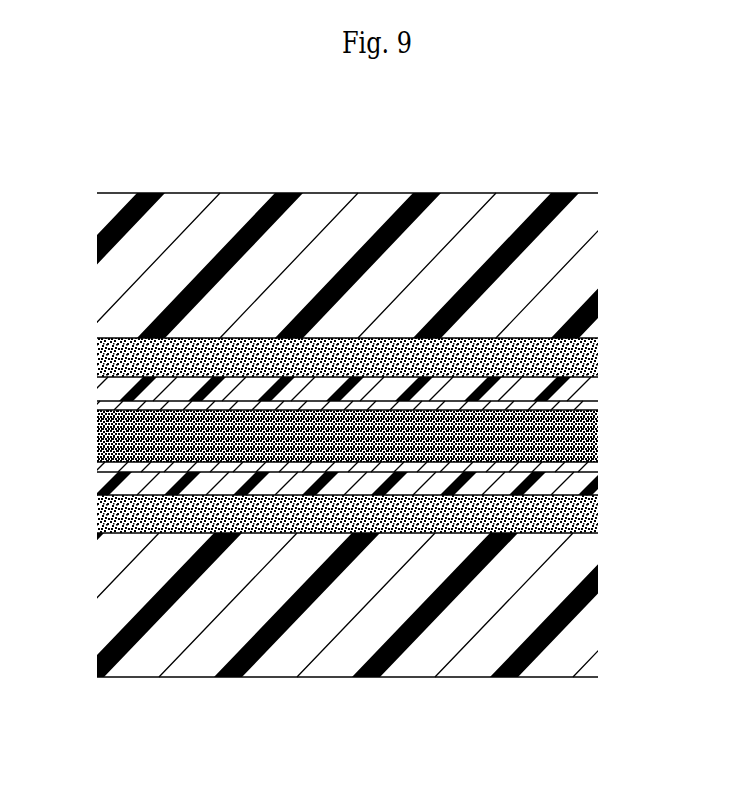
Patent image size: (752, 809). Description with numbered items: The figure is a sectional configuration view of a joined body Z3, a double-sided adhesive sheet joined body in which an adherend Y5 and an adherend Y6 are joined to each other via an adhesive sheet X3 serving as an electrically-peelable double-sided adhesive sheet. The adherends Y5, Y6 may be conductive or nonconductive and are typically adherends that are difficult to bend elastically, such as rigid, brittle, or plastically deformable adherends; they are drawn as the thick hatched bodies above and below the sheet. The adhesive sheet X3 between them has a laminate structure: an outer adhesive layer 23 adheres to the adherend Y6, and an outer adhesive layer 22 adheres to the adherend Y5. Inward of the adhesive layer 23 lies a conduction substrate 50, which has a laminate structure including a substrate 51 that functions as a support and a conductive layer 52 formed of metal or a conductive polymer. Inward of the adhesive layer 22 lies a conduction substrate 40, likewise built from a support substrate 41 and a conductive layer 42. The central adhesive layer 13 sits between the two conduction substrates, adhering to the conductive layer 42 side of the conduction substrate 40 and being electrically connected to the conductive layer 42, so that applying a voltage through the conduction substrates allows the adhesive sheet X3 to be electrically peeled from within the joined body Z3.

The adherend Y6 is at (97, 244).
The adherend Y5 is at (113, 631).
The joined body Z3 is at (409, 190).
The adhesive sheet X3 is at (377, 434).
The adhesive layer 23 is at (597, 343).
The adhesive layer 22 is at (597, 523).
The conduction substrate 50 is at (396, 377).
The substrate 51 is at (597, 382).
The conductive layer 52 is at (376, 396).
The adhesive layer 13 is at (597, 428).
The conduction substrate 40 is at (402, 493).
The conductive layer 42 is at (597, 465).
The substrate 41 is at (597, 488).